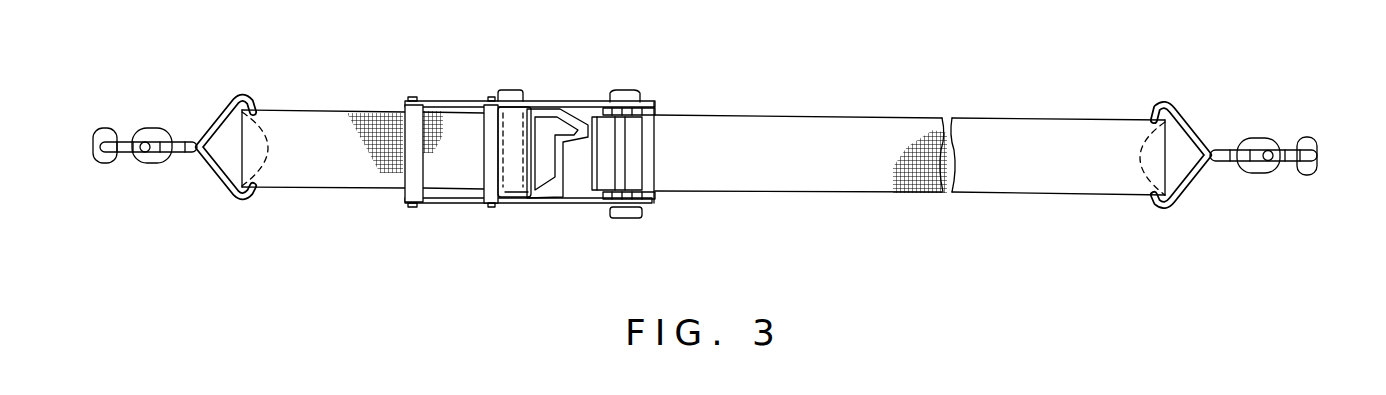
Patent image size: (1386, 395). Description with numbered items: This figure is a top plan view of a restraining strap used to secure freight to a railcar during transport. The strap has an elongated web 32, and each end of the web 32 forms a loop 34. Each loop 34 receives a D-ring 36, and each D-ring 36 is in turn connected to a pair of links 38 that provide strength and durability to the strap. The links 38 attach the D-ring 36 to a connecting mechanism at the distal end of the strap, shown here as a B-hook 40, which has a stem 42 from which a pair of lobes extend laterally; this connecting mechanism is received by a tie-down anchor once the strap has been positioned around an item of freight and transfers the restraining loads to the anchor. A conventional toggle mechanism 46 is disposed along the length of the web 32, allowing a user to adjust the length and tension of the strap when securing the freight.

The web 32 is at (872, 128).
The loop 34 is at (257, 127).
The D-ring 36 is at (223, 106).
The links 38 is at (180, 137).
The B-hook 40 is at (133, 138).
The stem 42 is at (97, 127).
The toggle mechanism 46 is at (523, 202).